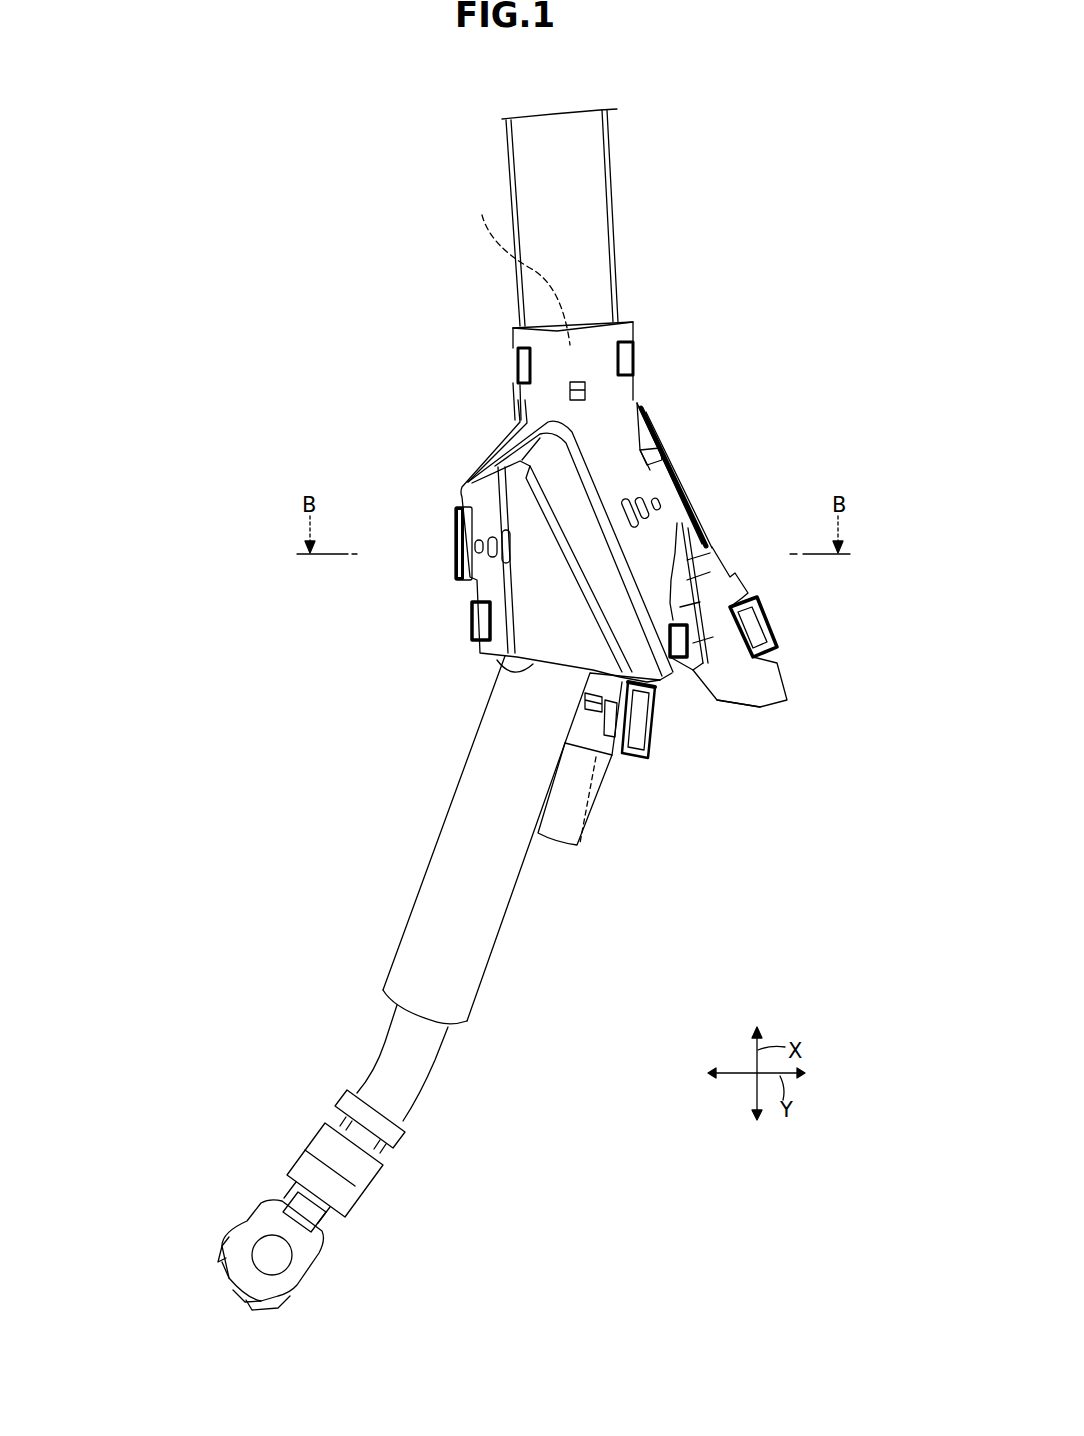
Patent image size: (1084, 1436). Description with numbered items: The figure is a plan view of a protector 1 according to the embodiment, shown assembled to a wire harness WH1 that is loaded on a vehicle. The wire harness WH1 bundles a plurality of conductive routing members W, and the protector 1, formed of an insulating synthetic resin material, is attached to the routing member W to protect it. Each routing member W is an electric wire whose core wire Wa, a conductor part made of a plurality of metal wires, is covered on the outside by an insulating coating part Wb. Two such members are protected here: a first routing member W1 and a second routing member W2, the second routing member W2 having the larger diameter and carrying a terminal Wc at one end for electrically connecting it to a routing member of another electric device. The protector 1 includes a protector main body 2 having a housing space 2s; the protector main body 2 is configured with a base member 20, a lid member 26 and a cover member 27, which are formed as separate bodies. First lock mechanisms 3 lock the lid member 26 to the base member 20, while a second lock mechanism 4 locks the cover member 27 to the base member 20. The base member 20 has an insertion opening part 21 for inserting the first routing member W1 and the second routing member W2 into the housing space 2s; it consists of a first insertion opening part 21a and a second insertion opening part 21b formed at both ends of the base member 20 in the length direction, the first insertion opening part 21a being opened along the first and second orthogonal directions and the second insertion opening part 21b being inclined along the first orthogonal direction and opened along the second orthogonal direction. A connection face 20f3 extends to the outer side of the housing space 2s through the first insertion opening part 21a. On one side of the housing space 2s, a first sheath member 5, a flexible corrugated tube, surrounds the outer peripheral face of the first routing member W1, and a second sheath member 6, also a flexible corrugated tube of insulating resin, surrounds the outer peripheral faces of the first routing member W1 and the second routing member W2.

The wire harness WH1 is at (541, 106).
The routing member W is at (441, 709).
The first routing member W1 is at (633, 823).
The second routing member W2 is at (441, 709).
The core wire Wa is at (379, 1050).
The insulating coating part Wb is at (398, 950).
The terminal Wc is at (304, 1175).
The protector 1 is at (665, 312).
The protector main body 2 is at (606, 567).
The housing space 2s is at (520, 269).
The first lock mechanism 3 is at (520, 362).
The second lock mechanism 4 is at (660, 740).
The first sheath member 5 is at (593, 787).
The second sheath member 6 is at (613, 200).
The base member 20 is at (762, 576).
The connection face 20f3 is at (737, 672).
The insertion opening part 21 is at (503, 286).
The first insertion opening part 21a is at (500, 677).
The second insertion opening part 21b is at (544, 326).
The lid member 26 is at (593, 415).
The cover member 27 is at (587, 722).